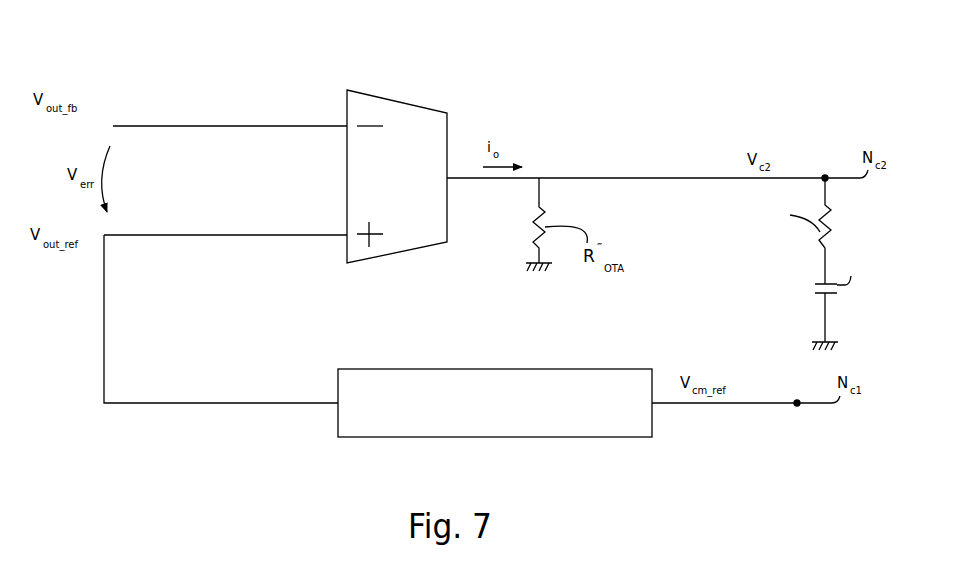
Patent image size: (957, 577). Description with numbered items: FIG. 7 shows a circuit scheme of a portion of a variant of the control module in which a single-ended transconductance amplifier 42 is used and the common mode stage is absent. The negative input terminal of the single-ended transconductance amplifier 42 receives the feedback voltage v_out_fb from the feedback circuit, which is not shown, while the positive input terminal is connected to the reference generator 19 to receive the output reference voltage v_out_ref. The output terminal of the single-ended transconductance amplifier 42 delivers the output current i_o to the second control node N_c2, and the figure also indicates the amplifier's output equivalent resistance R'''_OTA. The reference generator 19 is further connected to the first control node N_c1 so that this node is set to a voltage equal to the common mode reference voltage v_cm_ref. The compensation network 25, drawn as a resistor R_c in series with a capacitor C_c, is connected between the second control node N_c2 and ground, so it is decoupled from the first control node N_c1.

The single-ended transconductance amplifier 42 is at (427, 118).
The reference generator 19 is at (621, 376).
The compensation network 25 is at (875, 294).